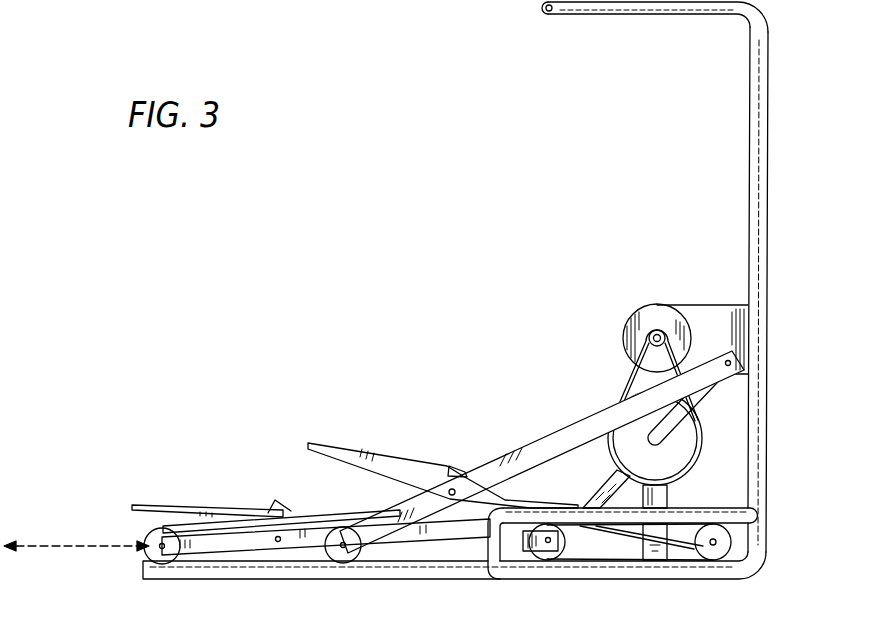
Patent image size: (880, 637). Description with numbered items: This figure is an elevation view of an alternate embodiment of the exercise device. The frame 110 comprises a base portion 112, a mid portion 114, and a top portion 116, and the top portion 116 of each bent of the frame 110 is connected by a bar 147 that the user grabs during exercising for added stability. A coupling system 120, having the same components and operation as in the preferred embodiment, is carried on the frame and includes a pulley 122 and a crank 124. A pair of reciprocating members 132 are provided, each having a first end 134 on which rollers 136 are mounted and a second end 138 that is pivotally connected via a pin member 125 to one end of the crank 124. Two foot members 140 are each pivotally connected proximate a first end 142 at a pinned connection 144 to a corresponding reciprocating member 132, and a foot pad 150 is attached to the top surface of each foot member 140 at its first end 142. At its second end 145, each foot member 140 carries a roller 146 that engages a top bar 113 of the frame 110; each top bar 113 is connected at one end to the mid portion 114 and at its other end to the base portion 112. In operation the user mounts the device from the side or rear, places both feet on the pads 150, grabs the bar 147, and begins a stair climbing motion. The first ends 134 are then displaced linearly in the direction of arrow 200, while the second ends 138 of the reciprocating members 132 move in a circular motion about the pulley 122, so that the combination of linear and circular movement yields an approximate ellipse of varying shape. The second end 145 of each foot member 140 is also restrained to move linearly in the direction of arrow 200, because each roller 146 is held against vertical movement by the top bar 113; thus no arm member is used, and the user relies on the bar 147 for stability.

The frame 110 is at (491, 319).
The base portion 112 is at (566, 581).
The top bar 113 is at (742, 514).
The mid portion 114 is at (771, 170).
The top portion 116 is at (620, 37).
The coupling system 120 is at (703, 440).
The pulley 122 is at (610, 417).
The crank 124 is at (705, 398).
The pin member 125 is at (737, 351).
The reciprocating member 132 is at (259, 541).
The first end 134 is at (365, 537).
The roller 136 is at (150, 552).
The second end 138 is at (712, 358).
The foot member 140 is at (589, 435).
The first end 142 is at (443, 447).
The pinned connection 144 is at (452, 488).
The second end 145 is at (677, 538).
The roller 146 is at (716, 553).
The bar 147 is at (546, 8).
The foot pad 150 is at (210, 505).
The arrow 200 is at (40, 540).